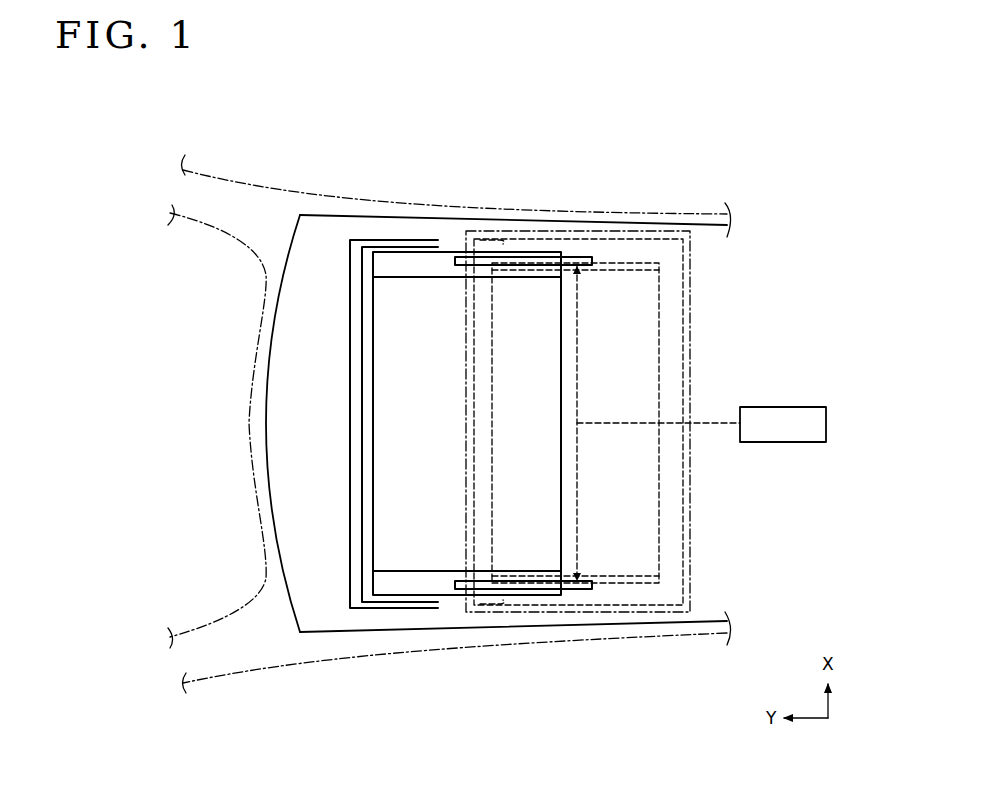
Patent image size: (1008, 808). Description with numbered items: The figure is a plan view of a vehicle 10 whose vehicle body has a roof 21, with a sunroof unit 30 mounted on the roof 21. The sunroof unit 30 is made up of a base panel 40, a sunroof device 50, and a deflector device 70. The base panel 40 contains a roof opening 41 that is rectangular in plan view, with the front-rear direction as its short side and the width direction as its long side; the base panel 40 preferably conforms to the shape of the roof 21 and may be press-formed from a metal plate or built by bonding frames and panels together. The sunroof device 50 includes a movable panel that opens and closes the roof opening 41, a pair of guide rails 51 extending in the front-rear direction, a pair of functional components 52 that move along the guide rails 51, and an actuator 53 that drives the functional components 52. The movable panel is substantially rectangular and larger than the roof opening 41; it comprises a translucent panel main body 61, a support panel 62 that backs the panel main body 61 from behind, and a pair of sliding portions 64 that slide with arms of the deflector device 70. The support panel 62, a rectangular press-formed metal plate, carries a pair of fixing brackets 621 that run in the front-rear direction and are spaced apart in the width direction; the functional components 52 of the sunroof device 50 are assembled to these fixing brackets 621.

The vehicle 10 is at (124, 122).
The roof 21 is at (550, 208).
The sunroof unit 30 is at (323, 201).
The base panel 40 is at (330, 634).
The roof opening 41 is at (372, 505).
The sunroof device 50 is at (648, 230).
The guide rails 51 is at (428, 280).
The functional components 52 is at (456, 257).
The actuator 53 is at (826, 423).
The panel main body 61 is at (692, 318).
The support panel 62 is at (693, 343).
The fixing brackets 621 is at (610, 268).
The sliding portions 64 is at (499, 239).
The deflector device 70 is at (350, 408).